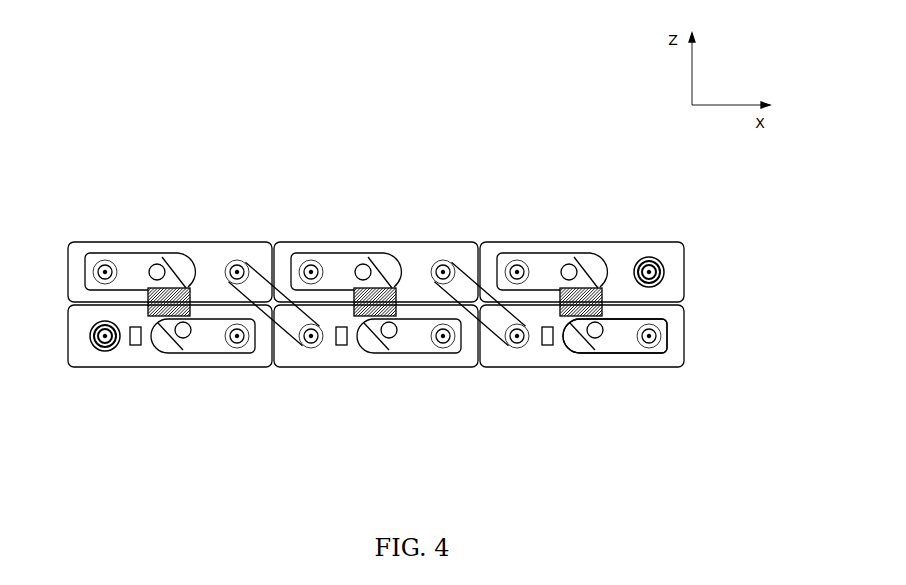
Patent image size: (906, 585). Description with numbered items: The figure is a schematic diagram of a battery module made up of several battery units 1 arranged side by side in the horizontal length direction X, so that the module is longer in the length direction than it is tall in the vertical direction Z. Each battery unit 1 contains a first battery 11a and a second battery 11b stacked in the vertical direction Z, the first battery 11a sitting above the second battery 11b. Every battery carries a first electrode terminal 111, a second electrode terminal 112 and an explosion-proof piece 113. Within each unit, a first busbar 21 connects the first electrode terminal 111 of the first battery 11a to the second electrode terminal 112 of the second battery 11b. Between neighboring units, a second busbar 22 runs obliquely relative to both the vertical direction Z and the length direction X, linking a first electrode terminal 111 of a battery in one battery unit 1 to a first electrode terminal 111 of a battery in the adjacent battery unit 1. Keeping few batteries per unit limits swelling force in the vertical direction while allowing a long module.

The battery unit 1 is at (178, 215).
The first battery 11a is at (684, 277).
The second battery 11b is at (682, 327).
The first electrode terminal 111 is at (105, 353).
The second electrode terminal 112 is at (653, 268).
The explosion-proof piece 113 is at (592, 290).
The first busbar 21 is at (627, 343).
The second busbar 22 is at (493, 347).